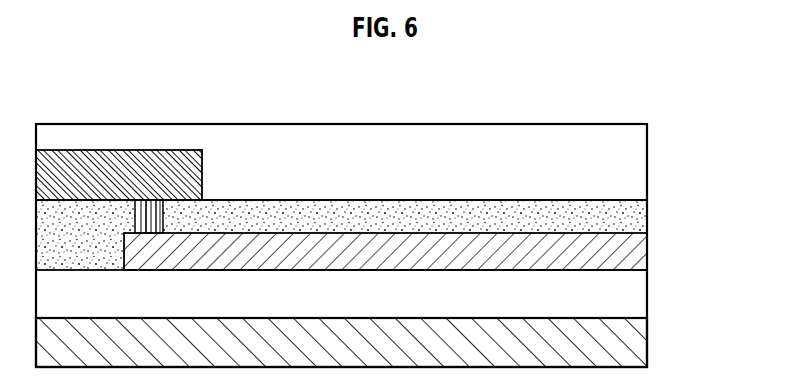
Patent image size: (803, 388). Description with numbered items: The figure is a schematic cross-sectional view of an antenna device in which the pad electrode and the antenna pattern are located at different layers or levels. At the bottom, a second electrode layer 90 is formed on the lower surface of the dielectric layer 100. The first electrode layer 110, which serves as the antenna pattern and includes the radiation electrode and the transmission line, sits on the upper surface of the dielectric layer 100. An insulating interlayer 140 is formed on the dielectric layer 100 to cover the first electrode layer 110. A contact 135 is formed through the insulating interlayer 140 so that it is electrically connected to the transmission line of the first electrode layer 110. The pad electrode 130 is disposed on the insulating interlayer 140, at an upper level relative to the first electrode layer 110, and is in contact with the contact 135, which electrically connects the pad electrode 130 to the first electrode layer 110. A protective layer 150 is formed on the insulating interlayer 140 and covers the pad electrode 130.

The second electrode layer 90 is at (645, 340).
The dielectric layer 100 is at (640, 293).
The first electrode layer 110 is at (647, 250).
The pad electrode 130 is at (98, 170).
The contact 135 is at (152, 210).
The insulating interlayer 140 is at (640, 215).
The protective layer 150 is at (641, 160).